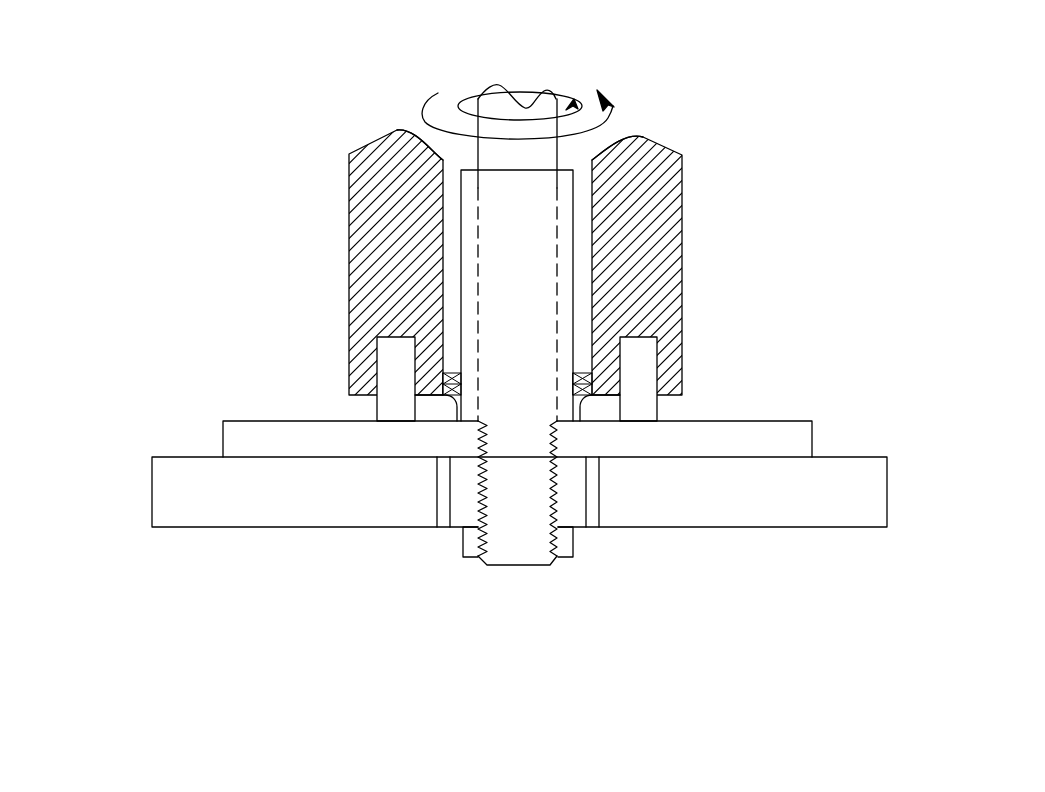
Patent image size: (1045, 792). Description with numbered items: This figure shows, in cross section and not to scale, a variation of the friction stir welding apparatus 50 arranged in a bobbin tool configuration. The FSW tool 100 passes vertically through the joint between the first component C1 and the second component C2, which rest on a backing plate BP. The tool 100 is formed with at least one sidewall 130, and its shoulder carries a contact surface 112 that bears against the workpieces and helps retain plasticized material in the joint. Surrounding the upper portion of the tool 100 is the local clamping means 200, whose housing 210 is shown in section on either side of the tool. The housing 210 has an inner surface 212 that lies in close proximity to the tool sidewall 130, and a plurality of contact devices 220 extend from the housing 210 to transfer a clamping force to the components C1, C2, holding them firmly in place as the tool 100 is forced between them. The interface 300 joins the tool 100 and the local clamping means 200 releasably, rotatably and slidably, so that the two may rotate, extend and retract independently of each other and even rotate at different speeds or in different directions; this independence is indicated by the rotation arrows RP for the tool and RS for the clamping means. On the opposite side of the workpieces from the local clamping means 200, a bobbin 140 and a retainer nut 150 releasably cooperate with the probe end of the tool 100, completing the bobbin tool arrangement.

The apparatus 50 is at (790, 273).
The FSW tool 100 is at (438, 138).
The contact surface 112 is at (477, 421).
The sidewall 130 is at (462, 275).
The bobbin 140 is at (460, 530).
The retainer nut 150 is at (556, 556).
The local clamping means 200 is at (343, 178).
The housing 210 is at (349, 213).
The inner surface 212 is at (465, 163).
The contact devices 220 is at (376, 412).
The interface 300 is at (458, 398).
The first component C1 is at (255, 425).
The second component C2 is at (780, 424).
The backing plate BP is at (152, 512).
The rotation direction of bolt RP is at (563, 100).
The rotation direction of assembly RS is at (616, 108).